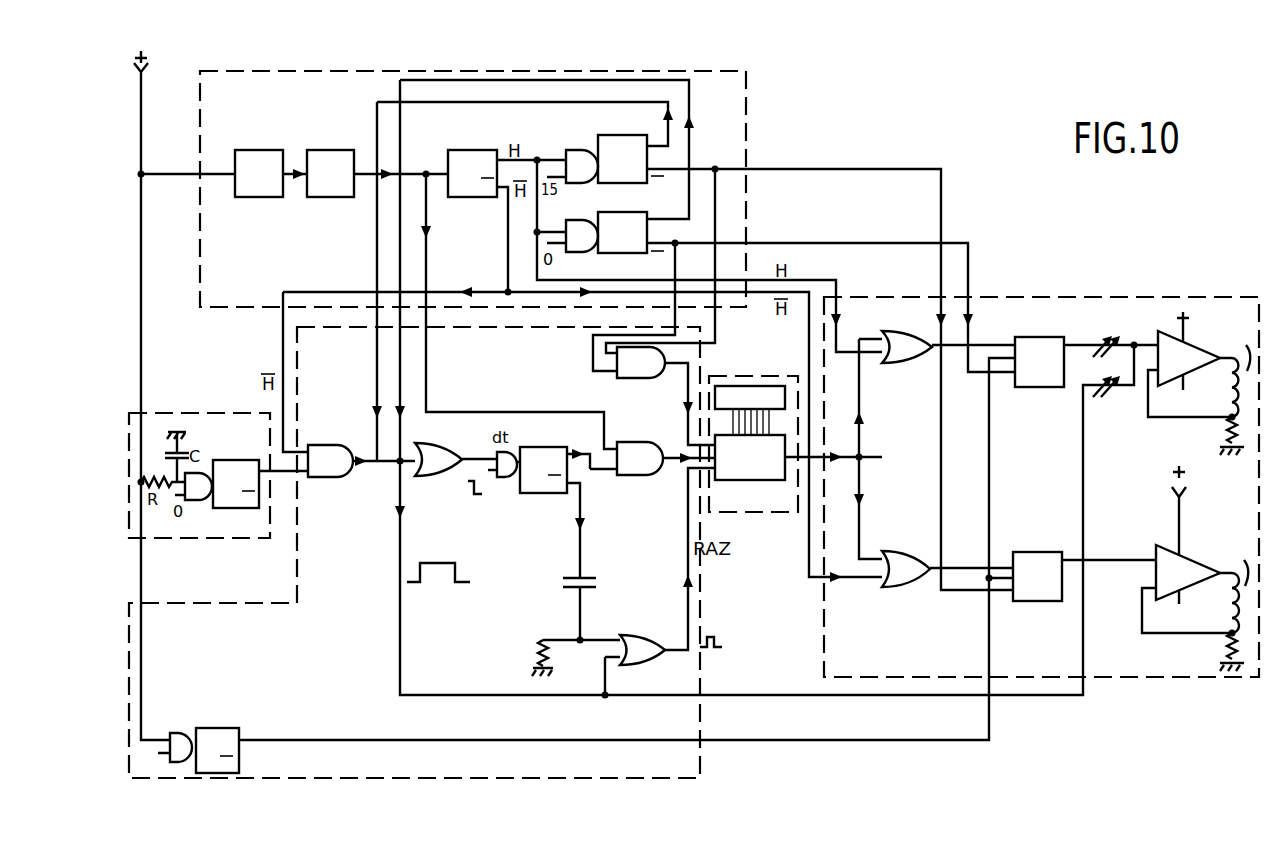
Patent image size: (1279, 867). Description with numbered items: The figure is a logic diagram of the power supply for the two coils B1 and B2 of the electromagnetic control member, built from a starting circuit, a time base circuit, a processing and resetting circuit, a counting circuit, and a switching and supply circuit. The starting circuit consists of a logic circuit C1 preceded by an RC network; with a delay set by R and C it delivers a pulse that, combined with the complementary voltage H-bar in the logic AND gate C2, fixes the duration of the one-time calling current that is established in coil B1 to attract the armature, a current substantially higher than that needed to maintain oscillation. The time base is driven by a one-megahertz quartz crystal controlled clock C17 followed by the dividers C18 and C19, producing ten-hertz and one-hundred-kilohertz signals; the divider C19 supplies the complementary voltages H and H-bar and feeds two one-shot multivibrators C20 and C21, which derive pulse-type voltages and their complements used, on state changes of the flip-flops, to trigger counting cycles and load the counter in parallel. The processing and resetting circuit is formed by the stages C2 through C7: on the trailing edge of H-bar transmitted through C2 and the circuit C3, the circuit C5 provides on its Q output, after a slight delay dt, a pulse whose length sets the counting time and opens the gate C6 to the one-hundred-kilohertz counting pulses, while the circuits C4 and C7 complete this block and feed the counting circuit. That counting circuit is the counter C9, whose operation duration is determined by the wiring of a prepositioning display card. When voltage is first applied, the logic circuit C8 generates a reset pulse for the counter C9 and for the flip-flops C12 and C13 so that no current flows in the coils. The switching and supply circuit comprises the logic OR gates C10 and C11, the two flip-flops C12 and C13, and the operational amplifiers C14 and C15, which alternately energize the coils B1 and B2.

The logic circuit C1 is at (199, 475).
The logic AND gate C2 is at (330, 474).
The logic circuit C3 is at (466, 474).
The logic circuit C4 is at (641, 377).
The circuit C5 is at (543, 484).
The gate C6 is at (640, 473).
The logic circuit C7 is at (642, 661).
The logic circuit C8 is at (223, 754).
The counter C9 is at (753, 444).
The logic OR gate C10 is at (907, 364).
The logic OR gate C11 is at (906, 583).
The flip-flop C12 is at (1039, 376).
The flip-flop C13 is at (1037, 591).
The operational amplifier C14 is at (1189, 372).
The amplifier C15 is at (1188, 587).
The quartz crystal controlled clock C17 is at (259, 188).
The divider C18 is at (330, 188).
The divider C19 is at (472, 188).
The one-shot multivibrator C20 is at (615, 153).
The one-shot multivibrator C21 is at (615, 242).
The coil B1 is at (1237, 372).
The coil B2 is at (1233, 587).